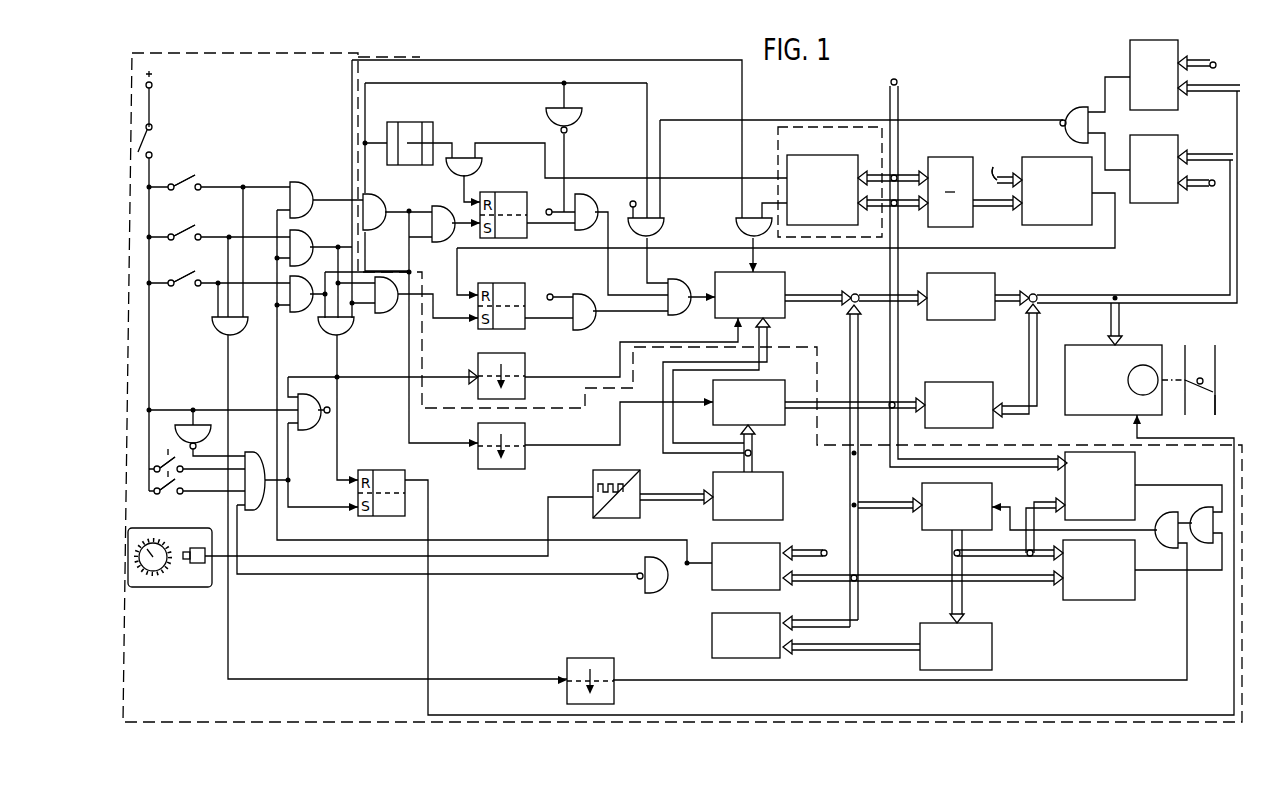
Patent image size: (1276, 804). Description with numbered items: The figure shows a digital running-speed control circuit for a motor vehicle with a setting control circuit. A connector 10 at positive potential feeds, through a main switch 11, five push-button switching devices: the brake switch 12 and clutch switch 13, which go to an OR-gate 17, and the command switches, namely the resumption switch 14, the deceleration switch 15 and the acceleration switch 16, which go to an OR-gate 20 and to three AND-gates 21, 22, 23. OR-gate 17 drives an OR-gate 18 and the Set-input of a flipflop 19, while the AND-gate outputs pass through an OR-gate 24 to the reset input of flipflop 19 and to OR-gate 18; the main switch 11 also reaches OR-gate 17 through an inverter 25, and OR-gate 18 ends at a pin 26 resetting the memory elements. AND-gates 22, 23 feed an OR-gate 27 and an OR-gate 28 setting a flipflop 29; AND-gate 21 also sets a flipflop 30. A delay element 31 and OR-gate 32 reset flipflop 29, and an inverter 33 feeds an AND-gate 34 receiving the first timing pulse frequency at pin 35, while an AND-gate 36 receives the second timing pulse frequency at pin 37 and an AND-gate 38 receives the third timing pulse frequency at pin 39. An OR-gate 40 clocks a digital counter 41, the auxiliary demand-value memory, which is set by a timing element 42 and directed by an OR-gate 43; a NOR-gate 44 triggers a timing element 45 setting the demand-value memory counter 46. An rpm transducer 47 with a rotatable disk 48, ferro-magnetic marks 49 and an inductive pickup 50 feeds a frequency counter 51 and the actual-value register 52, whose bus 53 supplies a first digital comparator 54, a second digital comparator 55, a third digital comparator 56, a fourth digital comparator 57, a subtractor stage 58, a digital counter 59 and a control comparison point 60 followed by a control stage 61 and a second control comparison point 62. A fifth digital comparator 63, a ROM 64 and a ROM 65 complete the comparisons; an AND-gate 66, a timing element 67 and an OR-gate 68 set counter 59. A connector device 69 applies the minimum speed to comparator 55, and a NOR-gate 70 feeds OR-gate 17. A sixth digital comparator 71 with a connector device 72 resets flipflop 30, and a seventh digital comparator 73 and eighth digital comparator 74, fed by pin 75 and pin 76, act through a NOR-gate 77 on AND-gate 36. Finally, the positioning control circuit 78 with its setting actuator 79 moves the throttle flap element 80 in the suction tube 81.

The connector 10 is at (152, 85).
The main switch 11 is at (152, 128).
The brake switch 12 is at (162, 503).
The clutch switch 13 is at (175, 477).
The resumption switch 14 is at (194, 272).
The deceleration switch 15 is at (197, 226).
The acceleration switch 16 is at (197, 178).
The OR-gate 17 is at (253, 462).
The OR-gate 18 is at (311, 428).
The flipflop 19 is at (383, 482).
The OR-gate 20 is at (220, 326).
The AND-gate 21 is at (301, 284).
The AND-gate 22 is at (299, 244).
The AND-gate 23 is at (299, 189).
The OR-gate 24 is at (332, 329).
The inverter 25 is at (185, 433).
The pin 26 is at (327, 413).
The OR-gate 27 is at (373, 228).
The OR-gate 28 is at (442, 216).
The flipflop 29 is at (508, 209).
The flipflop 30 is at (528, 329).
The delay element 31 is at (414, 132).
The OR-gate 32 is at (464, 167).
The inverter 33 is at (580, 120).
The AND-gate 34 is at (578, 224).
The pin 35 is at (548, 209).
The AND-gate 36 is at (664, 227).
The pin 37 is at (631, 202).
The AND-gate 38 is at (588, 328).
The pin 39 is at (550, 292).
The OR-gate 40 is at (680, 284).
The digital counter 41 is at (783, 282).
The timing element 42 is at (526, 392).
The OR-gate 43 is at (746, 227).
The NOR-gate 44 is at (389, 308).
The timing element 45 is at (524, 436).
The digital counter 46 is at (780, 384).
The rpm transducer 47 is at (188, 587).
The rotatable disk 48 is at (156, 570).
The ferro-magnetic marks 49 is at (142, 570).
The inductive pickup 50 is at (195, 548).
The frequency counter 51 is at (593, 478).
The digital register 52 is at (783, 483).
The bus 53 is at (899, 82).
The first digital comparator 54 is at (822, 166).
The second digital comparator 55 is at (728, 546).
The third digital comparator 56 is at (715, 649).
The fourth digital comparator 57 is at (1105, 598).
The subtractor stage 58 is at (950, 167).
The digital counter 59 is at (931, 496).
The control comparison point 60 is at (855, 294).
The control stage 61 is at (992, 274).
The control comparison point 62 is at (1035, 294).
The fifth digital comparator 63 is at (1092, 462).
The fixed-value memory (ROM) 64 is at (958, 384).
The fixed-value memory (ROM) 65 is at (996, 641).
The AND-gate 66 is at (1202, 519).
The timing element 67 is at (591, 670).
The OR-gate 68 is at (1168, 528).
The connector device 69 is at (824, 550).
The NOR-gate 70 is at (650, 584).
The sixth digital comparator 71 is at (1052, 170).
The connector device 72 is at (995, 167).
The seventh digital comparator 73 is at (1152, 196).
The eighth digital comparator 74 is at (1142, 54).
The pin 75 is at (1212, 186).
The pin 76 is at (1214, 62).
The NOR-gate 77 is at (1072, 119).
The positioning control circuit 78 is at (1087, 354).
The setting actuator 79 is at (1128, 380).
The element 80 is at (1193, 378).
The suction tube 81 is at (1216, 399).